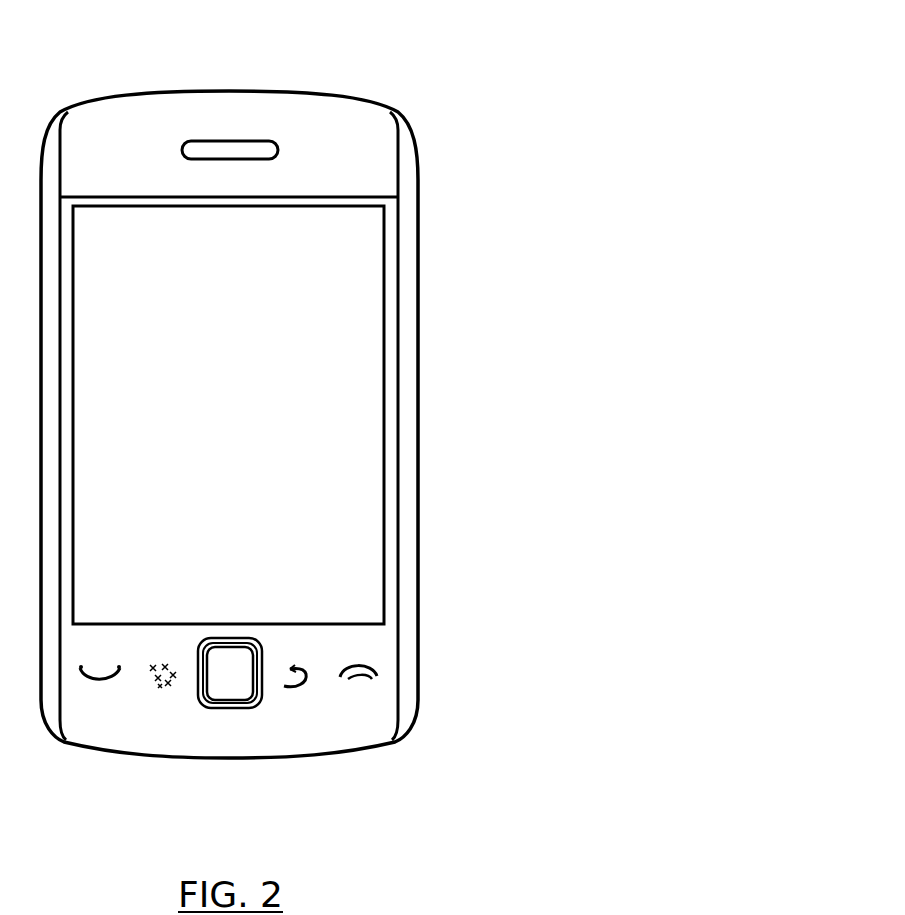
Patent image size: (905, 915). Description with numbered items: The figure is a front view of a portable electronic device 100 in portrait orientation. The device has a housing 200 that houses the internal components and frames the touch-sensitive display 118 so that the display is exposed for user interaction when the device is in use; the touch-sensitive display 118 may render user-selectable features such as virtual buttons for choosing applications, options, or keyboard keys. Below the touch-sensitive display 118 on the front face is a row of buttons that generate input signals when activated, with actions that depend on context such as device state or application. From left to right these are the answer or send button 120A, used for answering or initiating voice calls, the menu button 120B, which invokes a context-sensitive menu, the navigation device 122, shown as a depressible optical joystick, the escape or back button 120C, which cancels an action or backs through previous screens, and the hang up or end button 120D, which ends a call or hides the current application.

The portable electronic device 100 is at (448, 63).
The housing 200 is at (408, 290).
The touch-sensitive display 118 is at (355, 412).
The navigation device 122 is at (230, 709).
The answer (or send) button 120A is at (98, 690).
The menu button 120B is at (158, 697).
The escape (or back) button 120C is at (296, 694).
The hang up (or end) button 120D is at (362, 700).